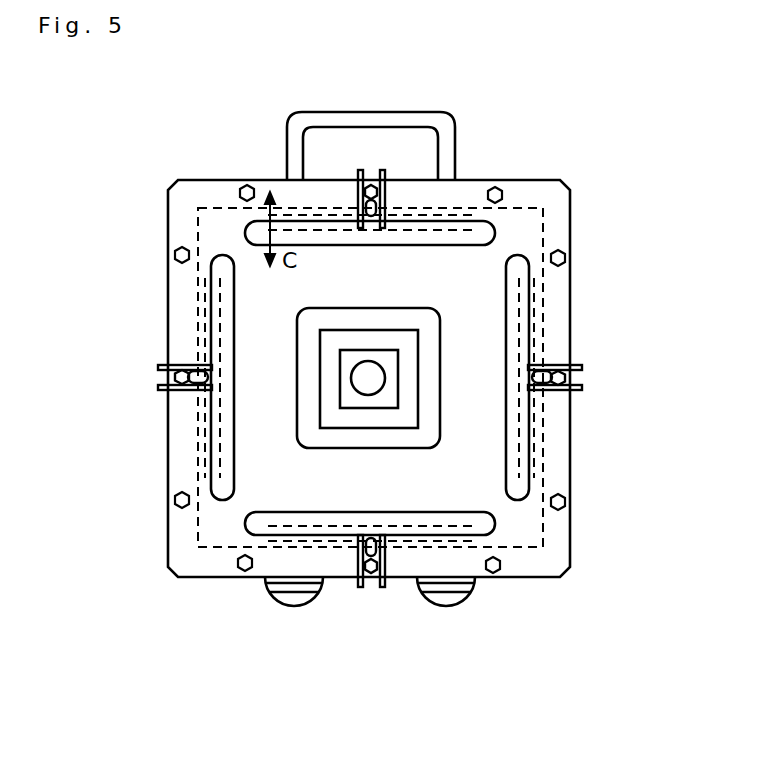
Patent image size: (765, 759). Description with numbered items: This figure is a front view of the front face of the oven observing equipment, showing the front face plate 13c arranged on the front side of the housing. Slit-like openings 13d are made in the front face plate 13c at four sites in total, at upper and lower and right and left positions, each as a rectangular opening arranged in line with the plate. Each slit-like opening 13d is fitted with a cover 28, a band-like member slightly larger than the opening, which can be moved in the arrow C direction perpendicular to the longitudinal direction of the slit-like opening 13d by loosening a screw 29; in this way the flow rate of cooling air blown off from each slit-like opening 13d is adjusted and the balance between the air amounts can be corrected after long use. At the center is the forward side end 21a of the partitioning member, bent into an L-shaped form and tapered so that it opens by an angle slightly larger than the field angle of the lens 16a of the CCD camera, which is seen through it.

The front face plate 13c is at (558, 313).
The slit-like opening 13d is at (445, 215).
The cover 28 is at (327, 235).
The screw 29 is at (374, 178).
The forward side end (flow direction changing part) 21a is at (388, 338).
The lens 16a is at (364, 392).